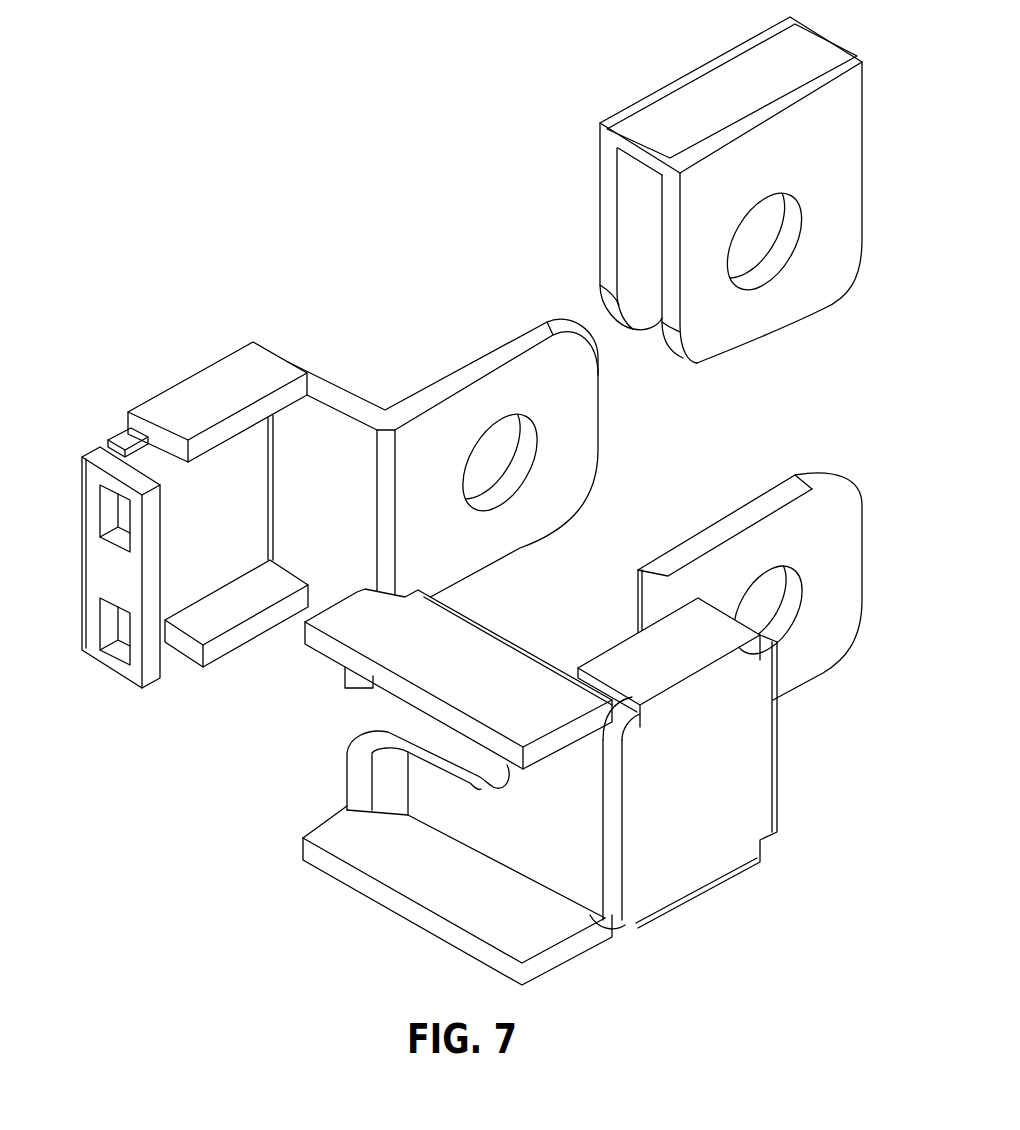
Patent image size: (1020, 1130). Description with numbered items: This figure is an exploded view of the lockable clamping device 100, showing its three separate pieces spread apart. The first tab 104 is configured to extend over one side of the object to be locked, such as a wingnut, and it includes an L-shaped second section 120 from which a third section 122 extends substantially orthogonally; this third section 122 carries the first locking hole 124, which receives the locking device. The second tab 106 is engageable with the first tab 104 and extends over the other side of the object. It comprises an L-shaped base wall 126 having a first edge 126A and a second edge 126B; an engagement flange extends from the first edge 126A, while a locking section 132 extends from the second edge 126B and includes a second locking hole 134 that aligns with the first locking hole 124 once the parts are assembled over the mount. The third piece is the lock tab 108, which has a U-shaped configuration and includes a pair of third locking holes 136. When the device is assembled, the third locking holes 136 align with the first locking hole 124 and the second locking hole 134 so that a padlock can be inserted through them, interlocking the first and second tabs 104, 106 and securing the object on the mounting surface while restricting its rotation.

The lockable clamping device 100 is at (217, 50).
The first tab 104 is at (668, 565).
The second tab 106 is at (138, 452).
The lock tab 108 is at (708, 97).
The second section 120 is at (183, 527).
The third section 122 is at (835, 540).
The first locking hole 124 is at (785, 645).
The L-shaped base wall 126 is at (82, 615).
The first edge 126A is at (780, 787).
The second edge 126B is at (636, 602).
The locking section 132 is at (572, 440).
The second locking hole 134 is at (497, 510).
The third locking holes 136 is at (808, 208).